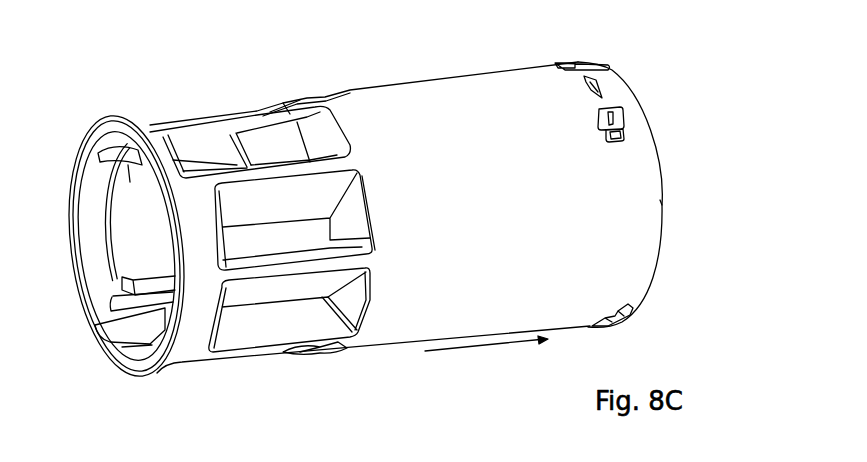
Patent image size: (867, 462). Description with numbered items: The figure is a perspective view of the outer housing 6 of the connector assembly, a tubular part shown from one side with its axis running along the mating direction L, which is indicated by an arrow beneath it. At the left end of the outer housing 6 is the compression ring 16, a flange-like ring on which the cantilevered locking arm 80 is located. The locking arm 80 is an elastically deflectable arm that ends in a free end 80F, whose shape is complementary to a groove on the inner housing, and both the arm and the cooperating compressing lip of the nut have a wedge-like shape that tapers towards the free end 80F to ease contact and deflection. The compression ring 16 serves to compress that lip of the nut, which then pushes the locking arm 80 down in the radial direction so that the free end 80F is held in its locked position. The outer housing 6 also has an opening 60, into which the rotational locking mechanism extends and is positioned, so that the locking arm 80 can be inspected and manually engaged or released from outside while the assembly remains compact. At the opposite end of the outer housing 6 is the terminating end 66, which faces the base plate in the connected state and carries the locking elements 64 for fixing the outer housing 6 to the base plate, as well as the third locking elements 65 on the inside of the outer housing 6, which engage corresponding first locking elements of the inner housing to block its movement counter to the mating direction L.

The outer housing 6 is at (414, 216).
The compression ring 16 is at (153, 373).
The free end 80F is at (132, 155).
The locking arm 80 is at (200, 152).
The opening 60 is at (254, 96).
The locking elements 64 is at (636, 85).
The terminating end 66 is at (670, 168).
The third locking elements 65 is at (674, 236).
The mating direction L is at (495, 346).